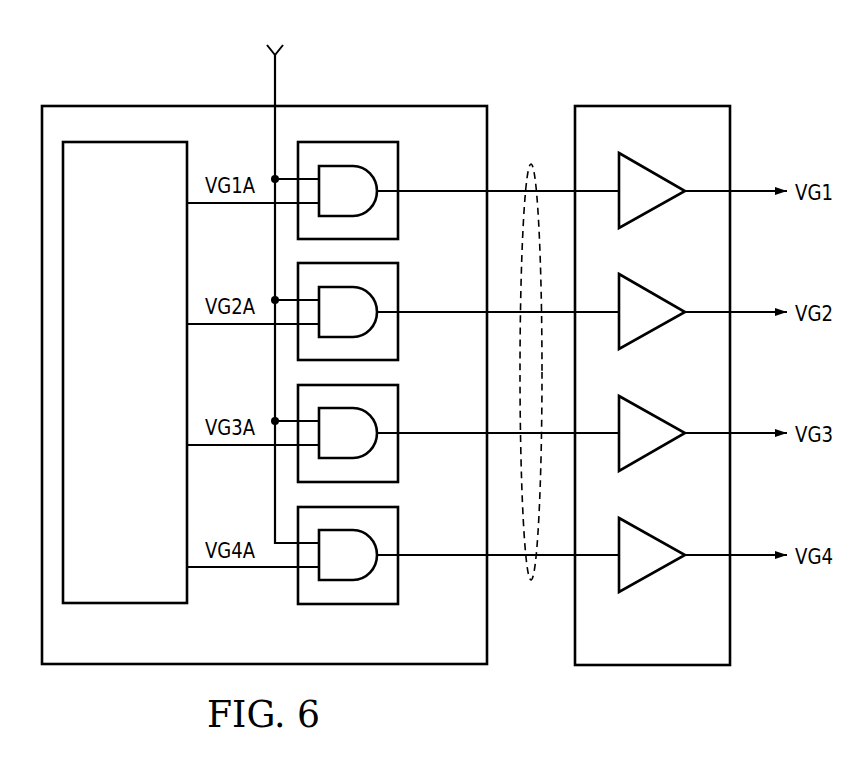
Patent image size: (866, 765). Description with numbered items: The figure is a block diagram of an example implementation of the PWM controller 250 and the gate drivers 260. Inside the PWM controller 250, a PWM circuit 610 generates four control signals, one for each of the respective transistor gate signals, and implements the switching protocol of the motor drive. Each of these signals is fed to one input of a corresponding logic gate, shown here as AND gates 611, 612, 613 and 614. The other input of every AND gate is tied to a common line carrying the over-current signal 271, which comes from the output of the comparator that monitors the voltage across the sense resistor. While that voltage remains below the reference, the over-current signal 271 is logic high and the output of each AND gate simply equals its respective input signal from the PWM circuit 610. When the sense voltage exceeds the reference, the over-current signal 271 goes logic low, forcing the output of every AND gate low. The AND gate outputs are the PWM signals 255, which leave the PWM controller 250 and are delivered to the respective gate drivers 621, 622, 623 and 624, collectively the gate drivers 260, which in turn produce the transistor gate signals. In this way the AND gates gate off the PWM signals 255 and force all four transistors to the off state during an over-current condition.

The PWM controller 250 is at (160, 98).
The PWM signals 255 is at (530, 164).
The gate drivers 260 is at (689, 98).
The OVER_CURRENT signal 271 is at (275, 82).
The PWM circuit 610 is at (147, 412).
The AND gate 611 is at (401, 177).
The AND gate 612 is at (401, 298).
The AND gate 613 is at (401, 447).
The AND gate 614 is at (401, 568).
The gate driver 621 is at (652, 168).
The gate driver 622 is at (652, 289).
The gate driver 623 is at (652, 411).
The gate driver 624 is at (652, 533).